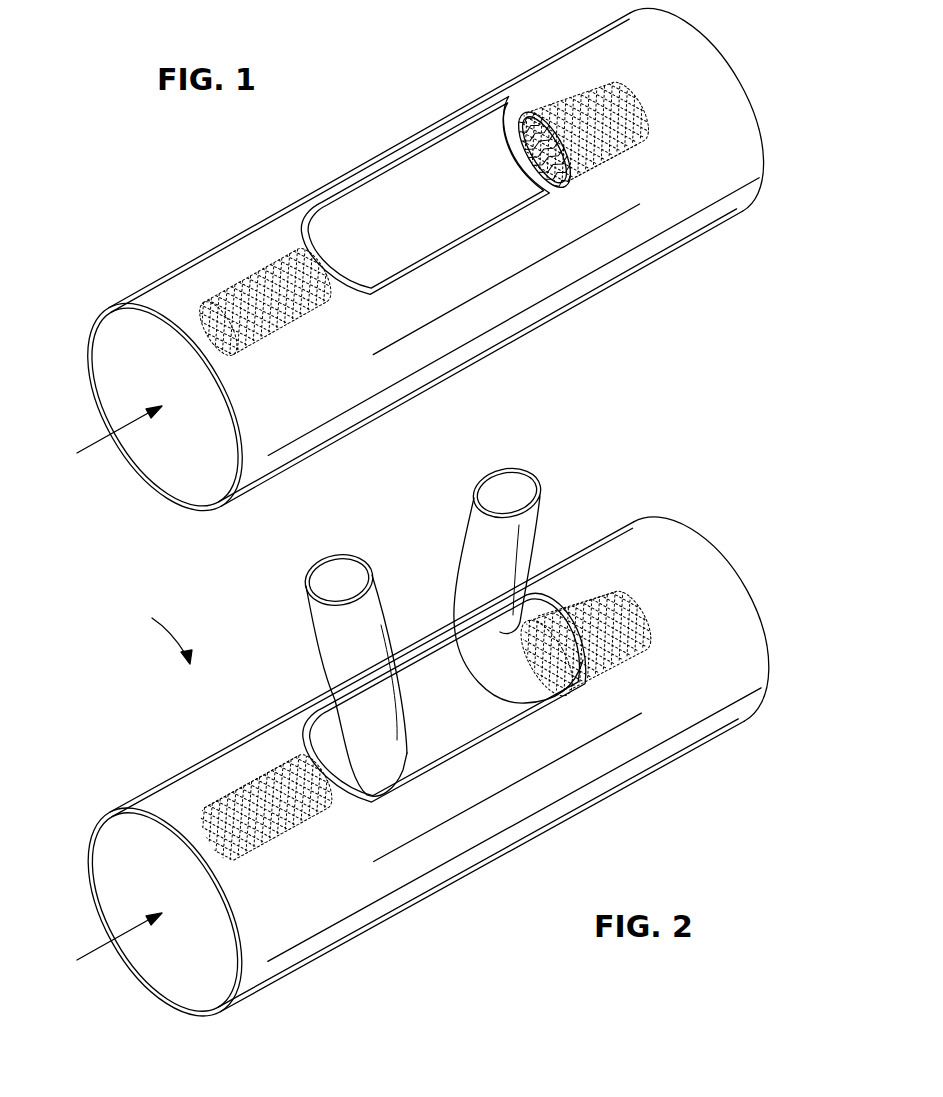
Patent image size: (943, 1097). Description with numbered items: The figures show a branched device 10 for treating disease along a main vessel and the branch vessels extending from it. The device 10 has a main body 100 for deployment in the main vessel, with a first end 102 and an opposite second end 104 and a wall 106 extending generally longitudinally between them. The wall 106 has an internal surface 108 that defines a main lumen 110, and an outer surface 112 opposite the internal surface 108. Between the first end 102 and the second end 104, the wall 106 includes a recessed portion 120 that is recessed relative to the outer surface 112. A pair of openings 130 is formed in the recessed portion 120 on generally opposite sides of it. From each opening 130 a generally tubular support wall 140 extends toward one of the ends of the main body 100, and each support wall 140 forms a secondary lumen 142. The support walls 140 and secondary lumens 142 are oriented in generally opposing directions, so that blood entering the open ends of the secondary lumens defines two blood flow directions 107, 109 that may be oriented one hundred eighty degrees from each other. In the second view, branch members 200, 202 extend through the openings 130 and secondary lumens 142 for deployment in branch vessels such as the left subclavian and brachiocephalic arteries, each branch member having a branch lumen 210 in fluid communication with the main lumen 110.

In FIG. 2, the device 10 is at (158, 635).
In FIG. 1, the main body 100 is at (540, 325).
In FIG. 2, the main body 100 is at (562, 822).
In FIG. 1, the first end 102 is at (742, 77).
In FIG. 2, the first end 102 is at (748, 590).
In FIG. 1, the second end 104 is at (102, 317).
In FIG. 2, the second end 104 is at (164, 912).
In FIG. 1, the wall 106 is at (222, 262).
In FIG. 2, the wall 106 is at (222, 770).
In FIG. 2, the blood flow direction 107 is at (205, 815).
In FIG. 1, the internal surface 108 is at (127, 394).
In FIG. 2, the internal surface 108 is at (119, 936).
In FIG. 2, the blood flow direction 109 is at (643, 602).
In FIG. 1, the main lumen 110 is at (140, 370).
In FIG. 1, the outer surface 112 is at (348, 403).
In FIG. 2, the outer surface 112 is at (481, 864).
In FIG. 1, the recessed portion 120 is at (410, 167).
In FIG. 2, the recessed portion 120 is at (432, 660).
In FIG. 1, the opening 130 is at (522, 132).
In FIG. 2, the opening 130 is at (565, 637).
In FIG. 1, the support wall 140 is at (622, 143).
In FIG. 2, the support wall 140 is at (623, 655).
In FIG. 1, the secondary lumen 142 is at (600, 162).
In FIG. 2, the branch member 200 is at (518, 565).
In FIG. 2, the branch member 202 is at (378, 588).
In FIG. 2, the branch lumen 210 is at (507, 487).